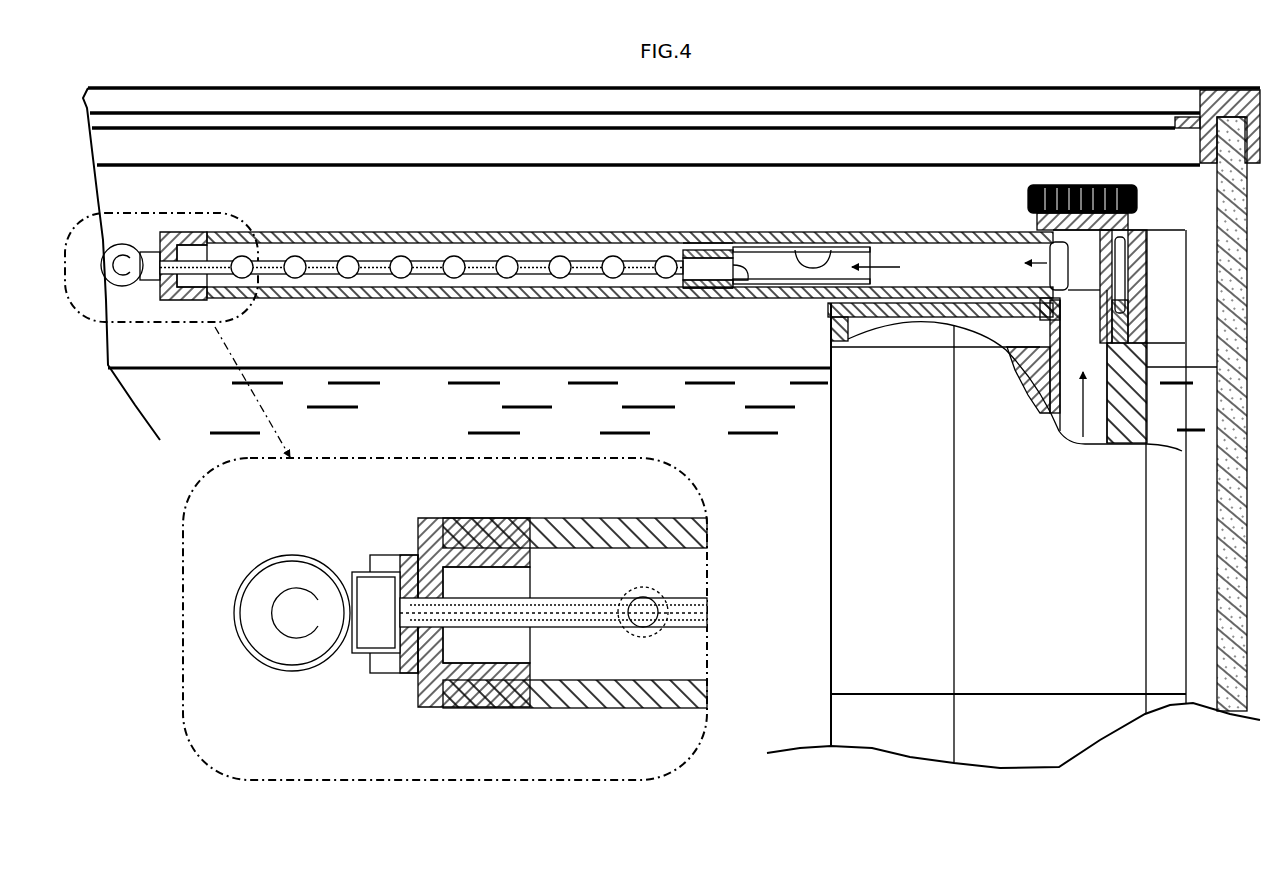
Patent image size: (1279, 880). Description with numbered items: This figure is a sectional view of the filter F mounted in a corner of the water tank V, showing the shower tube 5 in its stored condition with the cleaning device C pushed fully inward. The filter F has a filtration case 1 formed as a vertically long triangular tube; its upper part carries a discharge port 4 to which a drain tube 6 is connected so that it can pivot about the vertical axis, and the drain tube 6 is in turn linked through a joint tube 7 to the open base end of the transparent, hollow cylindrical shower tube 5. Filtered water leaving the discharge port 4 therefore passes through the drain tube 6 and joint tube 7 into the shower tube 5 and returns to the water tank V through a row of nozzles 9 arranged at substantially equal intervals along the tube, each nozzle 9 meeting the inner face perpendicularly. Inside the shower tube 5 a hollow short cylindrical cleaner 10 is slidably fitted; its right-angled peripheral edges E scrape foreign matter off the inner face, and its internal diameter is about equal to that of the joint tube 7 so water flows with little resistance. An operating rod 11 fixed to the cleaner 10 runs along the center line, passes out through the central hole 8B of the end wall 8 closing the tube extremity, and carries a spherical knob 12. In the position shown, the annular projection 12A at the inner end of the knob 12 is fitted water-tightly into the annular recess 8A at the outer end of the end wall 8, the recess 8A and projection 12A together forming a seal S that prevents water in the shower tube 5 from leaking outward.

The water tank V is at (1047, 82).
The filtration case 1 is at (846, 582).
The discharge port 4 is at (1150, 330).
The shower tube 5 is at (538, 230).
The drain tube 6 is at (990, 230).
The joint tube 7 is at (813, 266).
The end wall 8 is at (172, 228).
The annular recess 8A is at (380, 645).
The central hole 8B is at (486, 615).
The nozzle 9 is at (345, 278).
The cleaner 10 is at (713, 237).
The operating rod 11 is at (480, 256).
The spherical knob 12 is at (122, 243).
The annular projection 12A is at (383, 653).
The seal S is at (138, 322).
The edge E is at (733, 297).
The cleaning device C is at (680, 247).
The filter F is at (846, 451).